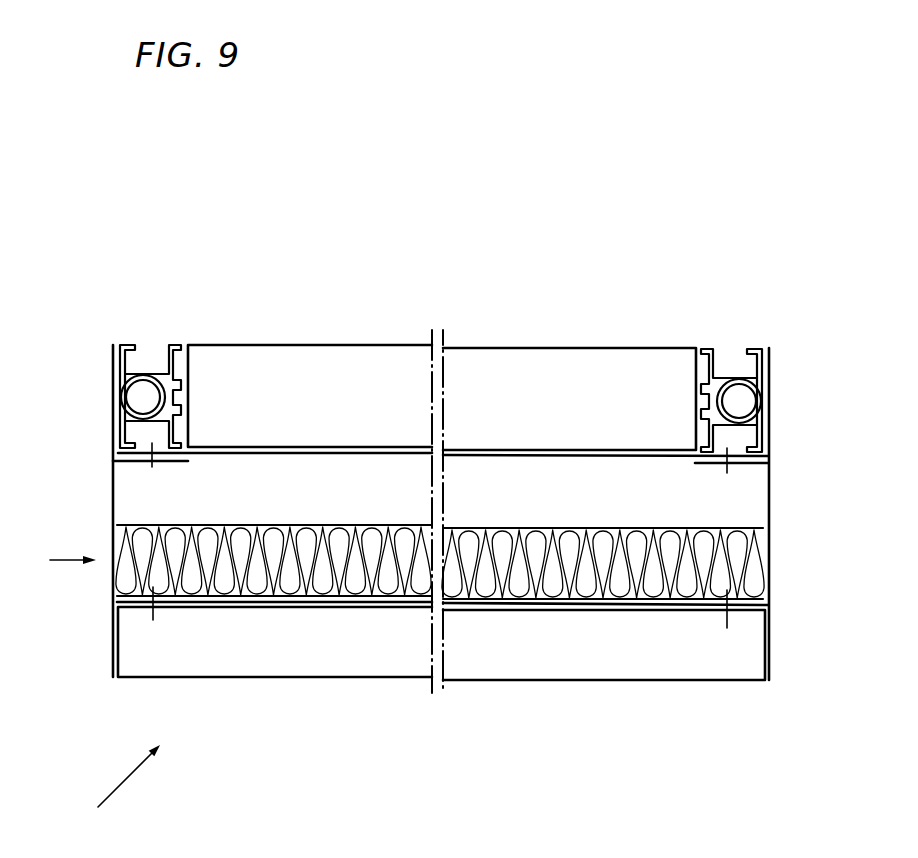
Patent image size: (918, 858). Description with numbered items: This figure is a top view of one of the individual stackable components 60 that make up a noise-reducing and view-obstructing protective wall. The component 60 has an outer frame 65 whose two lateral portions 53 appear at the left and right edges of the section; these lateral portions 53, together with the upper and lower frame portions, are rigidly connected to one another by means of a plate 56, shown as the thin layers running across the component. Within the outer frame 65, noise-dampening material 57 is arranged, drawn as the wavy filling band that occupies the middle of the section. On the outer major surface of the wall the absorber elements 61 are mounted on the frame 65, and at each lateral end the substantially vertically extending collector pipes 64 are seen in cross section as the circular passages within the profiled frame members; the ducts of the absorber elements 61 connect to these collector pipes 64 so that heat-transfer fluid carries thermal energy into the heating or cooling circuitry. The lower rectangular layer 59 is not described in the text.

The lateral portion 53 is at (480, 512).
The plate 56 is at (440, 608).
The noise-dampening material 57 is at (440, 642).
The inner panel 59 is at (441, 690).
The stackable component 60 is at (119, 788).
The absorber element 61 is at (442, 334).
The collector pipe 64 is at (439, 335).
The outer frame 65 is at (69, 548).